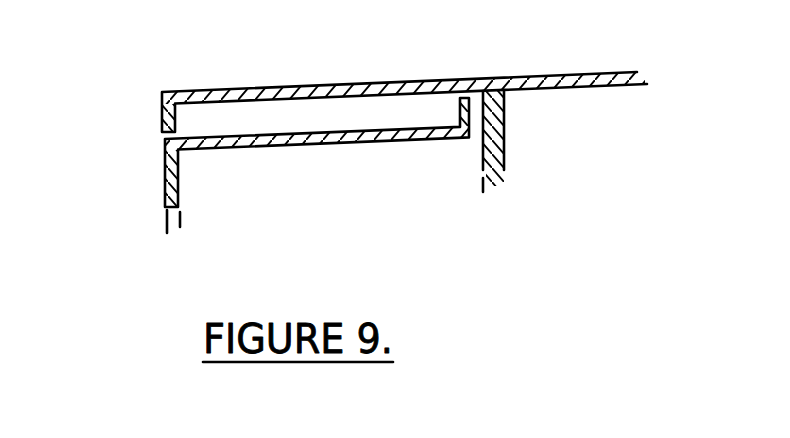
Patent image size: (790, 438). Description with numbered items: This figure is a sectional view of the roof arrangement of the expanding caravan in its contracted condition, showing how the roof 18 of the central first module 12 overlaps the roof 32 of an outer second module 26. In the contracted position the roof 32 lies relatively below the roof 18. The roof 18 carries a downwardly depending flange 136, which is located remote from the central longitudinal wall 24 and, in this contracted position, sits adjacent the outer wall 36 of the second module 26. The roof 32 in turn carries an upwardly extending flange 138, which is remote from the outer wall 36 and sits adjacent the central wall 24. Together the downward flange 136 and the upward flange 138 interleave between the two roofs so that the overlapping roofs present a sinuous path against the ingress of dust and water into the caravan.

The first module 12 is at (273, 84).
The roof 18 is at (450, 72).
The central longitudinal wall 24 is at (506, 133).
The second module 26 is at (162, 158).
The roof 32 is at (313, 144).
The outer wall 36 is at (163, 215).
The flange 136 is at (162, 113).
The flange 138 is at (464, 110).